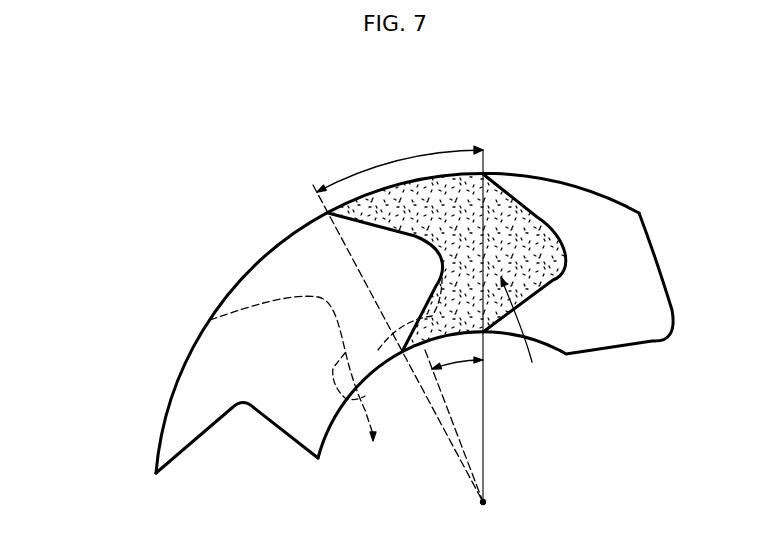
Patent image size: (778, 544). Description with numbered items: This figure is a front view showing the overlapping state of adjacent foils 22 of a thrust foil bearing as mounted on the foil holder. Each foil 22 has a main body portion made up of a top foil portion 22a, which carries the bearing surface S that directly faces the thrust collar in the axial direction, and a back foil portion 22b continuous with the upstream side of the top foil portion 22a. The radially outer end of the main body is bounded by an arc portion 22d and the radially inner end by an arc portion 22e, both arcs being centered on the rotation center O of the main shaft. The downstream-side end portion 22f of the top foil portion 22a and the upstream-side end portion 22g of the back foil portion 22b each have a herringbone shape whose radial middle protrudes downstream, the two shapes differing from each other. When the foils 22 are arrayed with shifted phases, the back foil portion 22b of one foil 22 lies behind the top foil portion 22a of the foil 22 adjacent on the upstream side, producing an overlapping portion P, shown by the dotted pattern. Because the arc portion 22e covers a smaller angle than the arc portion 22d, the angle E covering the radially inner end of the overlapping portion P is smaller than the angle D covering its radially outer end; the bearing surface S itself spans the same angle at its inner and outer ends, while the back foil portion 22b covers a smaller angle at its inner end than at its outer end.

The foil 22 is at (178, 372).
The top foil portion 22a is at (283, 270).
The back foil portion 22b is at (252, 340).
The arc portion 22d is at (412, 205).
The arc portion 22e is at (428, 352).
The downstream-side end portion 22f is at (370, 203).
The upstream-side end portion 22g is at (197, 438).
The bearing surface S is at (328, 253).
The angle covering radially outer end of overlapping portion D is at (449, 151).
The angle covering radially inner end of overlapping portion E is at (460, 367).
The overlapping portion P is at (519, 333).
The rotation center O is at (486, 502).